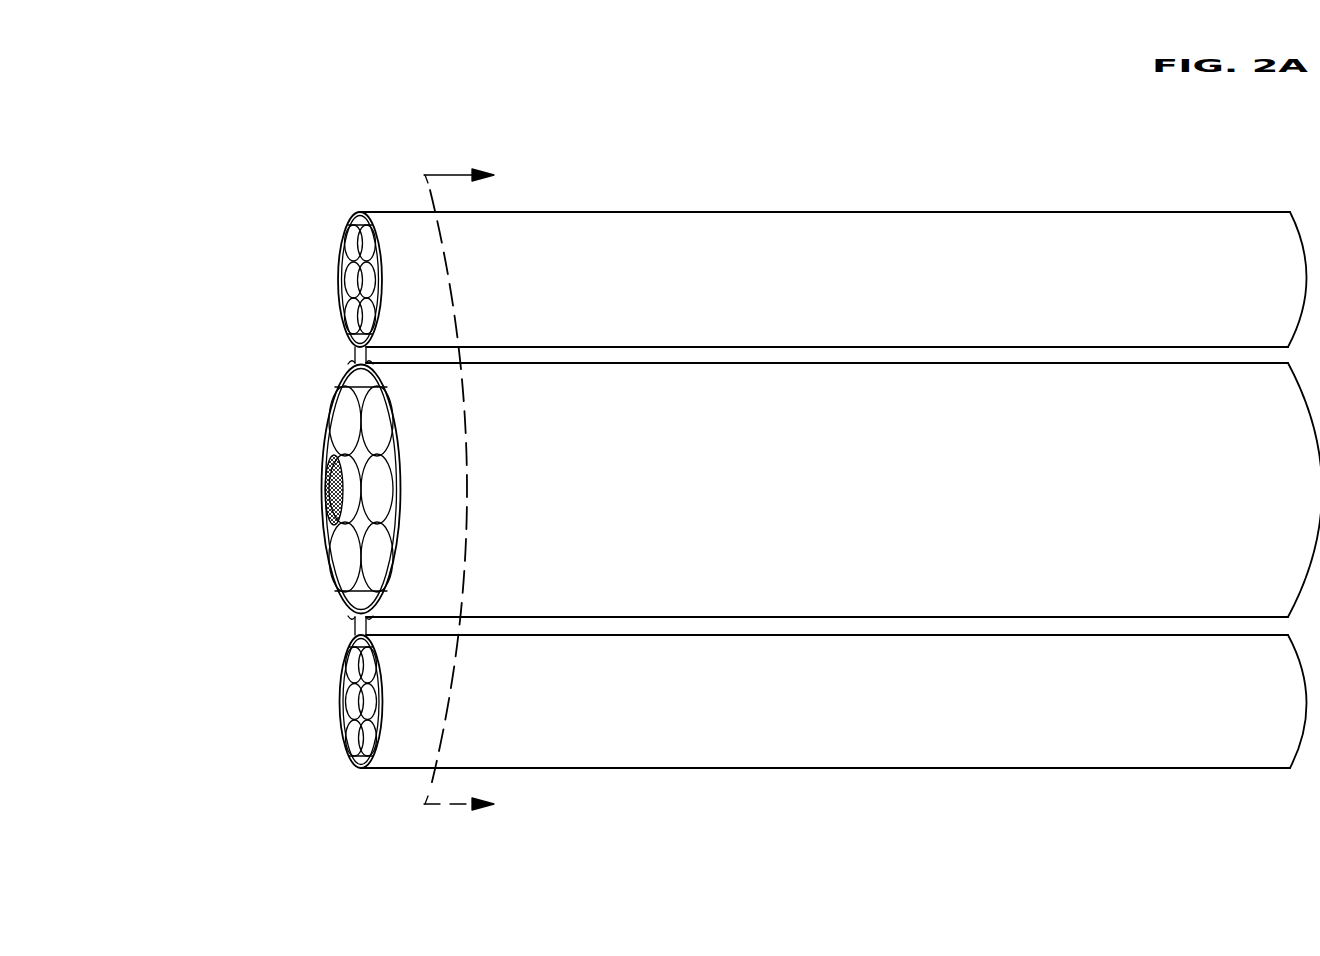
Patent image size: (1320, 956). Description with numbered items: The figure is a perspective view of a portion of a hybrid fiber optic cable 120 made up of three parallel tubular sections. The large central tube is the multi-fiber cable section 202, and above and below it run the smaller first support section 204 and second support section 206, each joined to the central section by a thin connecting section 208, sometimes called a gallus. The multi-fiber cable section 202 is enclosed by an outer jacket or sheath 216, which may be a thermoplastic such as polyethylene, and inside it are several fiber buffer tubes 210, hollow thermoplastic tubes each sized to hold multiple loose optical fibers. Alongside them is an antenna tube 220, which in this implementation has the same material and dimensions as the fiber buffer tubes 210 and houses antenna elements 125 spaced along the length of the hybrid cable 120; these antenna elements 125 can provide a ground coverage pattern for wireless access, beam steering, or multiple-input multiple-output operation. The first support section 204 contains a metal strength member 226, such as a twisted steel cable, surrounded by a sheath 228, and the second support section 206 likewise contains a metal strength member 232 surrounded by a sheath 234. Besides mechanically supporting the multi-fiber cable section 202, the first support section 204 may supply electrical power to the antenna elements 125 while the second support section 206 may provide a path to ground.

The hybrid cable 120 is at (205, 49).
The multi-fiber cable section 202 is at (302, 405).
The first support section 204 is at (326, 226).
The second support section 206 is at (318, 676).
The connecting section 208 is at (355, 355).
The antenna element 125 is at (330, 490).
The fiber buffer tube 210 is at (337, 548).
The sheath 216 is at (348, 605).
The antenna tube 220 is at (338, 455).
The metal strength member 226 is at (350, 280).
The sheath 228 is at (679, 212).
The metal strength member 232 is at (348, 700).
The sheath 234 is at (683, 768).